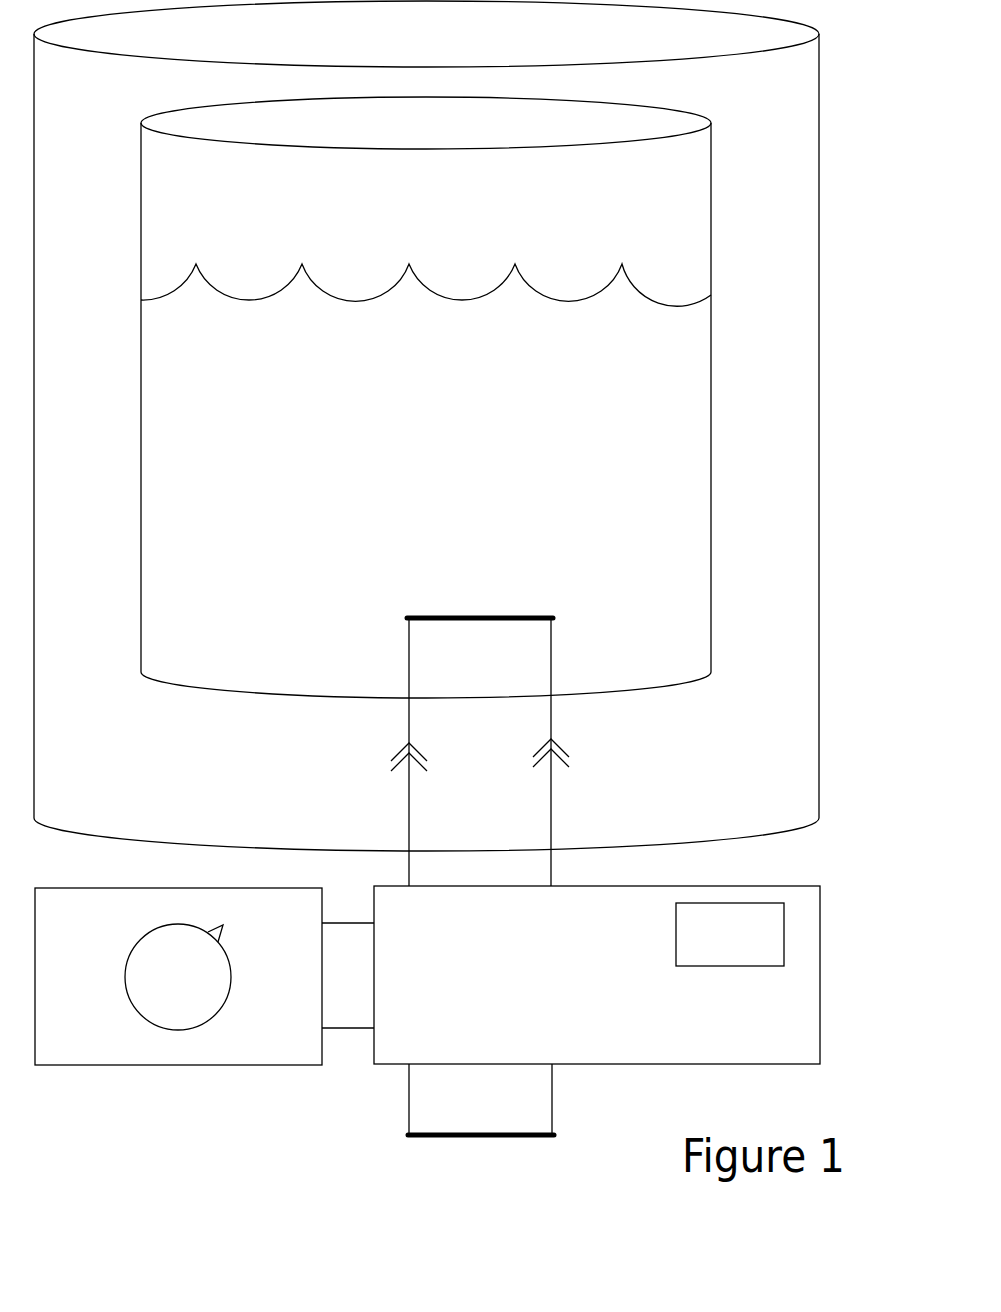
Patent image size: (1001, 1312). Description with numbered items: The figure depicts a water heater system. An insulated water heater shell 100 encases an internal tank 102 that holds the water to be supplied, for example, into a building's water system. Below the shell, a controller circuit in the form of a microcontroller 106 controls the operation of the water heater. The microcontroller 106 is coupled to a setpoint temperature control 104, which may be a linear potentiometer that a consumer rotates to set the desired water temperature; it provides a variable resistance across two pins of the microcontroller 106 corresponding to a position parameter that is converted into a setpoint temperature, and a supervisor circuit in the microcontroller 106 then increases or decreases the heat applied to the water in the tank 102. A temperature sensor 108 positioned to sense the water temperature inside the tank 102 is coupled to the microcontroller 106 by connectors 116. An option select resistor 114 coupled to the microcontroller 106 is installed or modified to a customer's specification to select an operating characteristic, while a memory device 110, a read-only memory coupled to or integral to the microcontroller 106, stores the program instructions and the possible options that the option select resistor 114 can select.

The insulated water heater shell 100 is at (819, 422).
The internal tank 102 is at (712, 398).
The setpoint temperature control 104 is at (225, 1066).
The microcontroller 106 is at (820, 973).
The temperature sensor 108 is at (537, 616).
The memory device 110 is at (785, 920).
The option select resistor 114 is at (520, 1138).
The connectors 116 is at (397, 758).